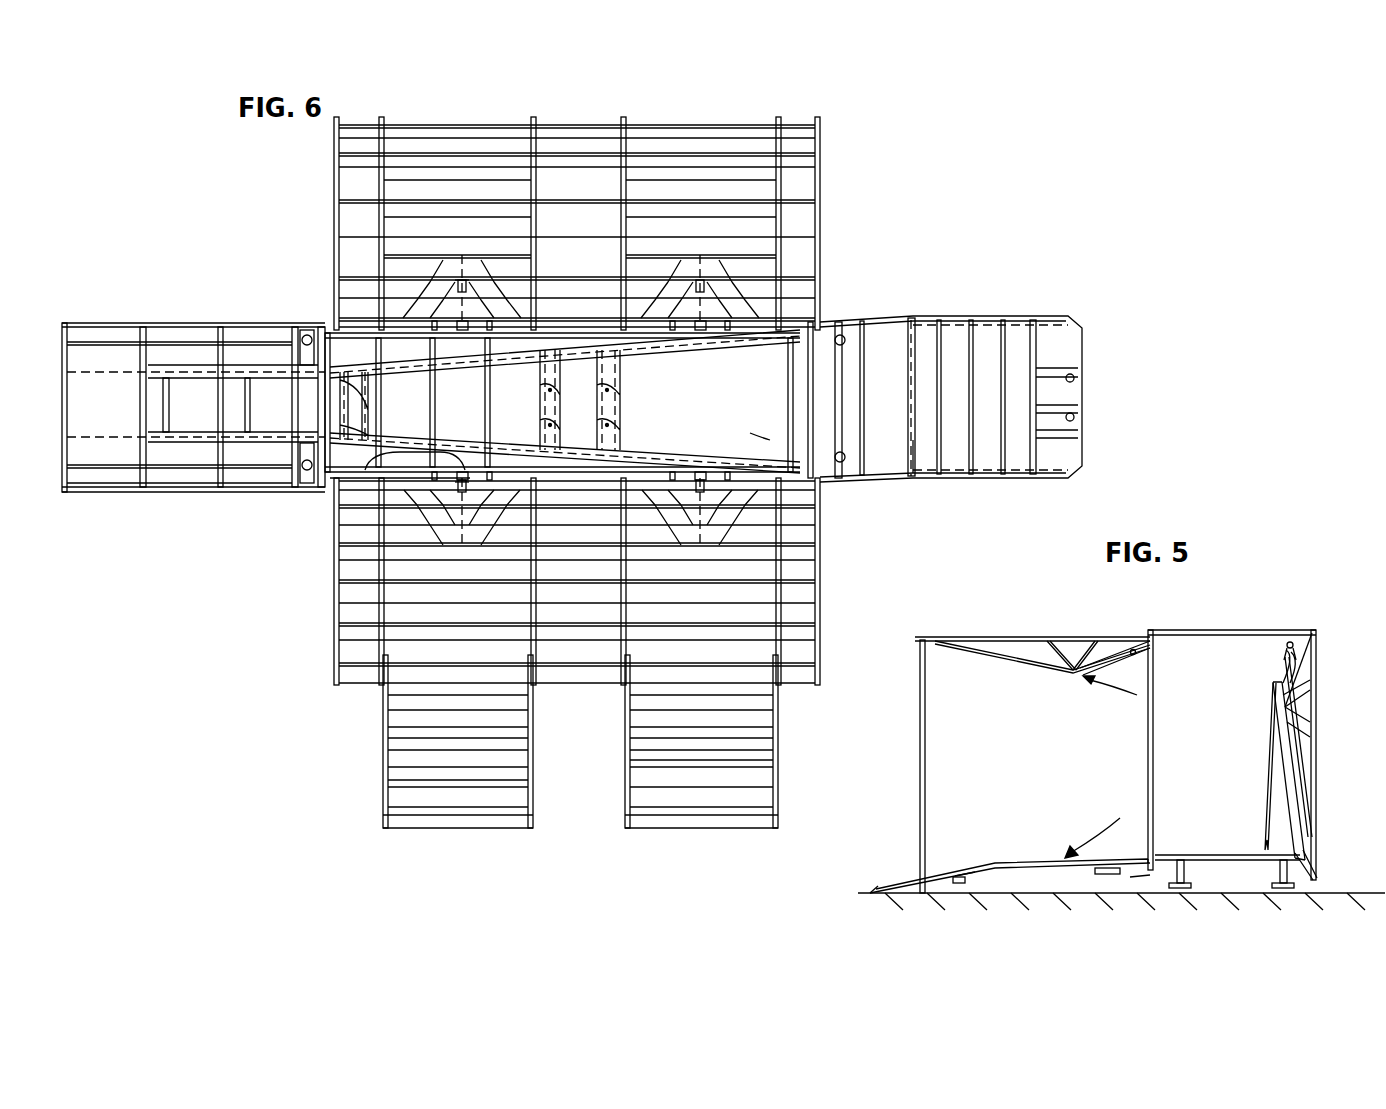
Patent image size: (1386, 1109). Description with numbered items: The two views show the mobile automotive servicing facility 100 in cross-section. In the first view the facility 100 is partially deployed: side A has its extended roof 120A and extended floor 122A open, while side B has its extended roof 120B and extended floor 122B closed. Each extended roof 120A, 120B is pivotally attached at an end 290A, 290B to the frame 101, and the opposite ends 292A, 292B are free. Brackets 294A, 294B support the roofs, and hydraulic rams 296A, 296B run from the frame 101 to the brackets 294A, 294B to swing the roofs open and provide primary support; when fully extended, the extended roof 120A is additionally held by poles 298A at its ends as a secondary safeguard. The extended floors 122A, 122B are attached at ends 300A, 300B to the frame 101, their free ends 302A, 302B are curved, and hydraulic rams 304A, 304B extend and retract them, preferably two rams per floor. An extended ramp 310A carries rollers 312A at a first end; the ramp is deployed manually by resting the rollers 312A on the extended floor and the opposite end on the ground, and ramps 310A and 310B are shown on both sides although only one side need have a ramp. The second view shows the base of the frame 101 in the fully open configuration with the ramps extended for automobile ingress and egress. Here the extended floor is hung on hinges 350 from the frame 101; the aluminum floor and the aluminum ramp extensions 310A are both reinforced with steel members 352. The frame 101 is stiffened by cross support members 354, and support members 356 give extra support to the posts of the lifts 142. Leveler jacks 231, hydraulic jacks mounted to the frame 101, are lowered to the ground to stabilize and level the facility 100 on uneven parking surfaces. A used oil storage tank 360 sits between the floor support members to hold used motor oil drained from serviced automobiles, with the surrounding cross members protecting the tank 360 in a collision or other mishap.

In FIG. 6, the mobile automotive servicing facility 100 is at (572, 381).
In FIG. 6, the frame 101 is at (993, 318).
In FIG. 5, the frame 101 is at (1212, 630).
In FIG. 5, the extended roof 120A is at (1042, 632).
In FIG. 5, the extended roof 120B is at (1325, 760).
In FIG. 6, the extended floor 122A is at (600, 668).
In FIG. 5, the extended floor 122A is at (1003, 863).
In FIG. 6, the extended floor 122B is at (592, 130).
In FIG. 5, the extended floor 122B is at (1287, 830).
In FIG. 6, the lifts 142 is at (350, 407).
In FIG. 6, the leveler jacks 231 is at (305, 335).
In FIG. 5, the end of extended roof 290A is at (1152, 630).
In FIG. 5, the end of extended roof 290B is at (1294, 646).
In FIG. 5, the opposite end of extended roof 292A is at (915, 637).
In FIG. 5, the opposite end of extended roof 292B is at (1313, 880).
In FIG. 5, the bracket 294A is at (980, 650).
In FIG. 5, the bracket 294B is at (1300, 705).
In FIG. 5, the hydraulic ram 296A is at (1140, 648).
In FIG. 5, the hydraulic ram 296B is at (1278, 655).
In FIG. 5, the poles 298A is at (920, 677).
In FIG. 5, the end of extended floor 300A is at (1158, 873).
In FIG. 5, the end of extended floor 300B is at (1307, 867).
In FIG. 5, the free end of extended floor 302A is at (957, 893).
In FIG. 5, the free end of extended floor 302B is at (1298, 633).
In FIG. 6, the hydraulic ram 304A is at (453, 513).
In FIG. 5, the hydraulic ram 304A is at (1130, 877).
In FIG. 6, the hydraulic ram 304B is at (462, 285).
In FIG. 5, the hydraulic ram 304B is at (1300, 855).
In FIG. 6, the extended ramp 310A is at (637, 760).
In FIG. 5, the extended ramp 310A is at (893, 882).
In FIG. 5, the extended ramp 310B is at (1262, 830).
In FIG. 5, the rollers 312A is at (973, 878).
In FIG. 6, the hinges 350 is at (375, 478).
In FIG. 6, the steel members 352 is at (360, 565).
In FIG. 6, the cross support members 354 is at (913, 453).
In FIG. 6, the support members 356 is at (553, 370).
In FIG. 6, the used oil storage tank 360 is at (763, 437).